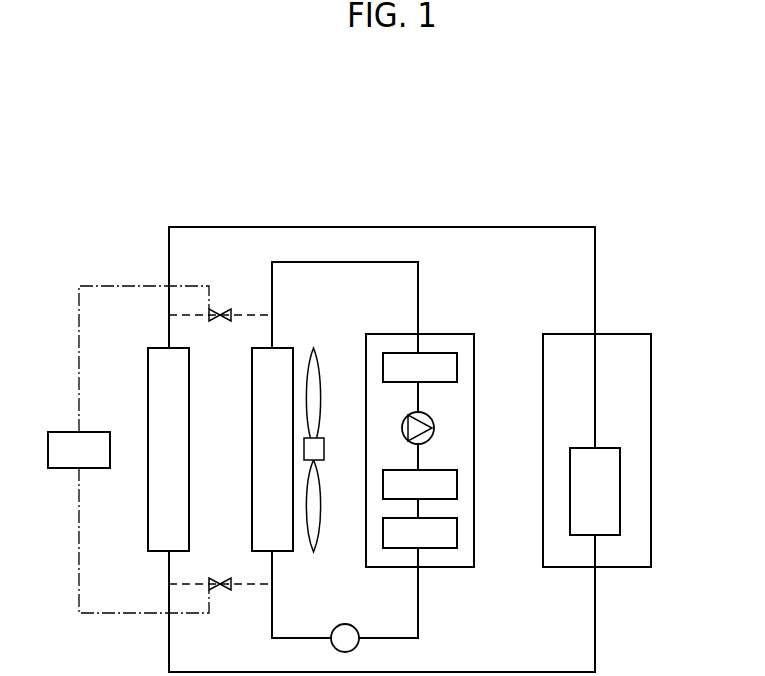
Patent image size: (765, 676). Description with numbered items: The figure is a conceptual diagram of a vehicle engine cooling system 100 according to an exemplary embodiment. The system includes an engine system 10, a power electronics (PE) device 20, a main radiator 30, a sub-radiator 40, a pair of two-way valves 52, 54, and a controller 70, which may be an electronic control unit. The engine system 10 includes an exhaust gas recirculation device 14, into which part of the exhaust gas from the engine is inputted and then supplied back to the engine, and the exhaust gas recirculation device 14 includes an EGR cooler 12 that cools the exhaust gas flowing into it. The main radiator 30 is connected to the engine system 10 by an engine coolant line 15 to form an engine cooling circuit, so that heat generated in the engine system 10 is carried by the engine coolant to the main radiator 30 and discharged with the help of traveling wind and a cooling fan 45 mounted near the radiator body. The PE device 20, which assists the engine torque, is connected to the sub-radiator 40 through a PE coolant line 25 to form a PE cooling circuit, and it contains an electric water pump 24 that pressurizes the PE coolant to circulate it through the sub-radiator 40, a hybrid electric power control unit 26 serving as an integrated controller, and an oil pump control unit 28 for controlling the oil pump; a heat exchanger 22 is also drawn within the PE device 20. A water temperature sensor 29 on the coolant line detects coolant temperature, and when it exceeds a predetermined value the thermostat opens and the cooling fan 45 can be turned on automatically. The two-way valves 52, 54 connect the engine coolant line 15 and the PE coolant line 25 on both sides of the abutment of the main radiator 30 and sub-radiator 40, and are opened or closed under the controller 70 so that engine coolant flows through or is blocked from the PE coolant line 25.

The vehicle engine cooling system 100 is at (358, 181).
The engine system 10 is at (651, 363).
The EGR cooler 12 is at (620, 478).
The exhaust gas recirculation (EGR) device 14 is at (624, 447).
The engine coolant line 15 is at (595, 257).
The power electronics (PE) device 20 is at (474, 334).
The heat exchanger 22 is at (457, 373).
The electric water pump (EWP) 24 is at (434, 426).
The PE coolant line 25 is at (418, 297).
The hybrid electric power control unit (HPCU) 26 is at (457, 484).
The oil pump control unit 28 is at (457, 532).
The water temperature sensor 29 is at (350, 624).
The main radiator 30 is at (148, 368).
The sub-radiator 40 is at (252, 530).
The cooling fan 45 is at (314, 552).
The first 2-way valve 52 is at (220, 309).
The second 2-way valve 54 is at (222, 590).
The controller 70 is at (62, 468).